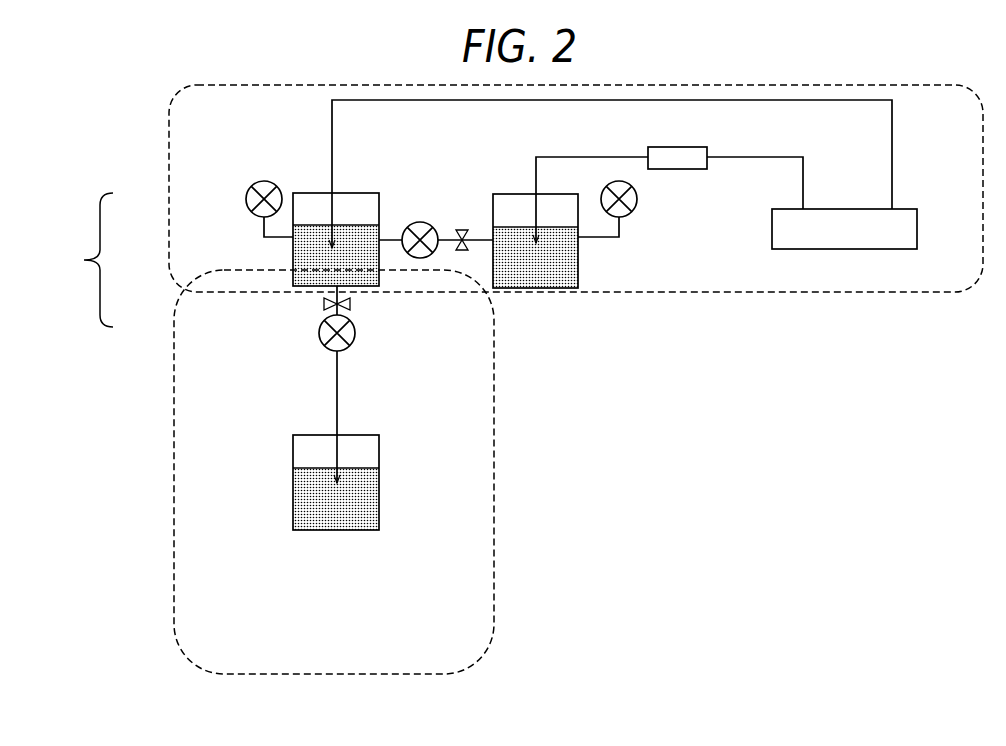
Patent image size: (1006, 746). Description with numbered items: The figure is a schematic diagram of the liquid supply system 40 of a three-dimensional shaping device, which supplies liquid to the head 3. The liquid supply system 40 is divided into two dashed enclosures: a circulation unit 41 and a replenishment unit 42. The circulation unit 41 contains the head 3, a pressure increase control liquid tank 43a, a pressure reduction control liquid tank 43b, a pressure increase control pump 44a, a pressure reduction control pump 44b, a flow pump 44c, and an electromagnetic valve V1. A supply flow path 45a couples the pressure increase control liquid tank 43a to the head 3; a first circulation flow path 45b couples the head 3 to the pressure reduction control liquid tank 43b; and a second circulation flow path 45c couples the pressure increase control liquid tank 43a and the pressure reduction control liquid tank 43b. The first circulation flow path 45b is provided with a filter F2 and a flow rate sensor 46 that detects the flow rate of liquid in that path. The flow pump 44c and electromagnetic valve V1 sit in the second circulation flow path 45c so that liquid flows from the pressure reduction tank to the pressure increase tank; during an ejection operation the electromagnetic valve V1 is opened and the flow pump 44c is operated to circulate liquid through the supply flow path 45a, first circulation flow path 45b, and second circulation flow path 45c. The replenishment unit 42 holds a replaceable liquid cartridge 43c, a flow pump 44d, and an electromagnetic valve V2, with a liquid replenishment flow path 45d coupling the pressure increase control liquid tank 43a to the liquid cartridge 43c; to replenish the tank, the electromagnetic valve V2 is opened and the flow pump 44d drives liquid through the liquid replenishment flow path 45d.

The head 3 is at (838, 249).
The liquid supply system 40 is at (75, 260).
The circulation unit 41 is at (169, 213).
The replenishment unit 42 is at (176, 333).
The pressure increase control liquid tank 43a is at (293, 254).
The pressure reduction control liquid tank 43b is at (578, 276).
The liquid cartridge 43c is at (379, 513).
The pressure increase control pump 44a is at (250, 182).
The pressure reduction control pump 44b is at (634, 212).
The flow pump 44c is at (425, 222).
The flow pump 44d is at (350, 346).
The supply flow path 45a is at (892, 143).
The first circulation flow path 45b is at (751, 158).
The second circulation flow path 45c is at (382, 226).
The liquid replenishment flow path 45d is at (337, 410).
The flow rate sensor 46 is at (628, 138).
The filter F2 is at (707, 150).
The electromagnetic valve V1 is at (462, 229).
The electromagnetic valve V2 is at (349, 305).